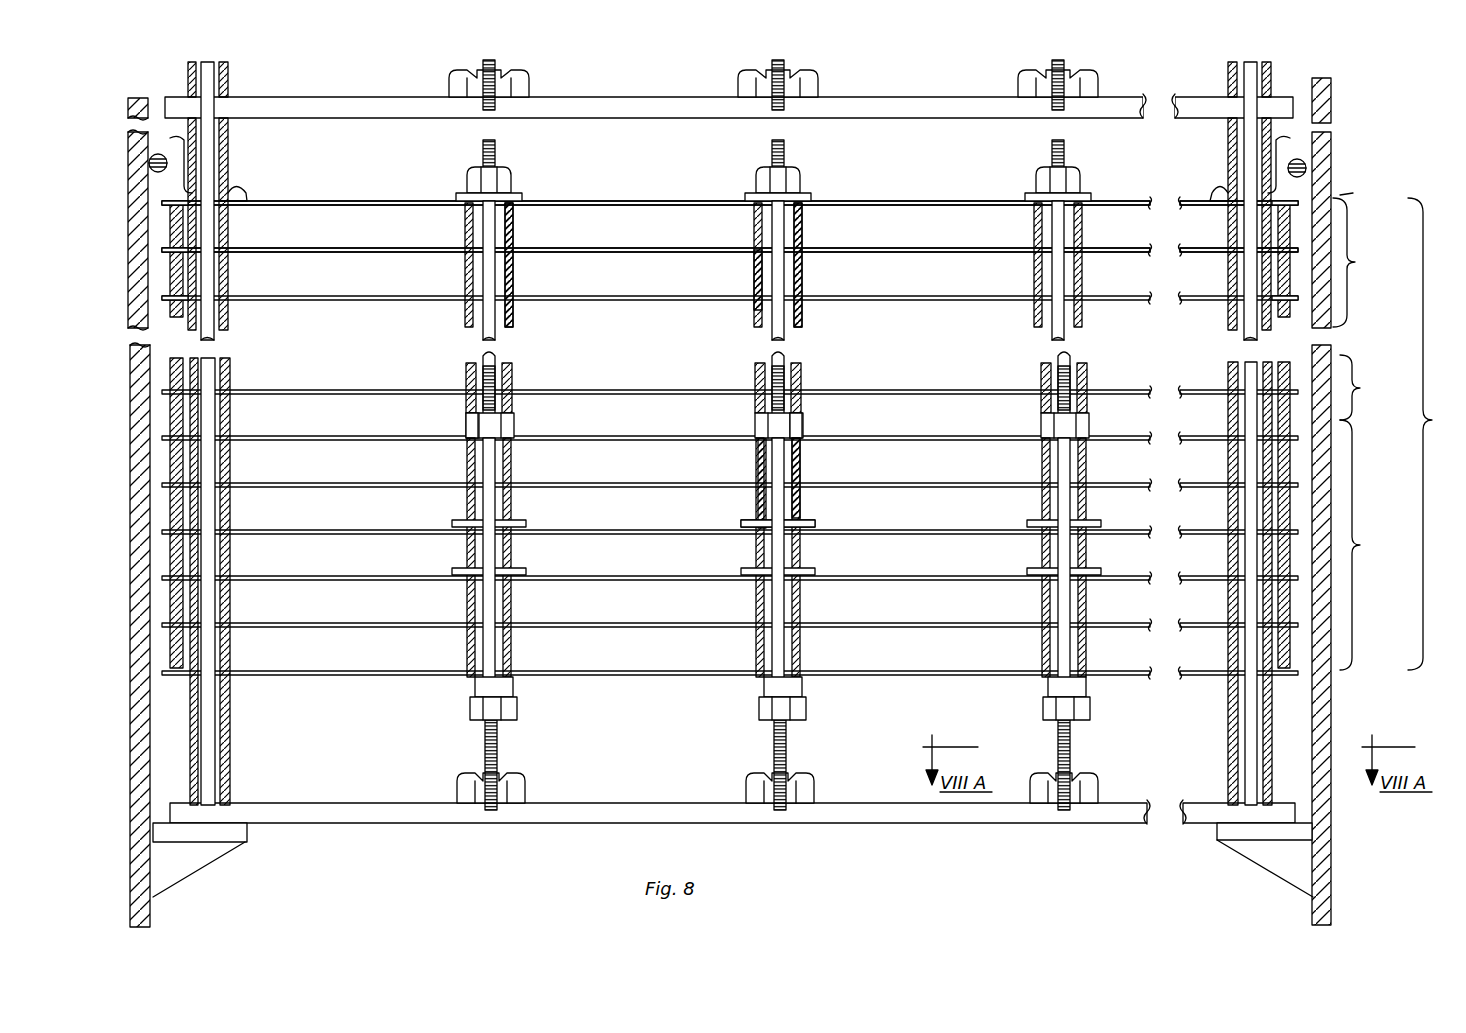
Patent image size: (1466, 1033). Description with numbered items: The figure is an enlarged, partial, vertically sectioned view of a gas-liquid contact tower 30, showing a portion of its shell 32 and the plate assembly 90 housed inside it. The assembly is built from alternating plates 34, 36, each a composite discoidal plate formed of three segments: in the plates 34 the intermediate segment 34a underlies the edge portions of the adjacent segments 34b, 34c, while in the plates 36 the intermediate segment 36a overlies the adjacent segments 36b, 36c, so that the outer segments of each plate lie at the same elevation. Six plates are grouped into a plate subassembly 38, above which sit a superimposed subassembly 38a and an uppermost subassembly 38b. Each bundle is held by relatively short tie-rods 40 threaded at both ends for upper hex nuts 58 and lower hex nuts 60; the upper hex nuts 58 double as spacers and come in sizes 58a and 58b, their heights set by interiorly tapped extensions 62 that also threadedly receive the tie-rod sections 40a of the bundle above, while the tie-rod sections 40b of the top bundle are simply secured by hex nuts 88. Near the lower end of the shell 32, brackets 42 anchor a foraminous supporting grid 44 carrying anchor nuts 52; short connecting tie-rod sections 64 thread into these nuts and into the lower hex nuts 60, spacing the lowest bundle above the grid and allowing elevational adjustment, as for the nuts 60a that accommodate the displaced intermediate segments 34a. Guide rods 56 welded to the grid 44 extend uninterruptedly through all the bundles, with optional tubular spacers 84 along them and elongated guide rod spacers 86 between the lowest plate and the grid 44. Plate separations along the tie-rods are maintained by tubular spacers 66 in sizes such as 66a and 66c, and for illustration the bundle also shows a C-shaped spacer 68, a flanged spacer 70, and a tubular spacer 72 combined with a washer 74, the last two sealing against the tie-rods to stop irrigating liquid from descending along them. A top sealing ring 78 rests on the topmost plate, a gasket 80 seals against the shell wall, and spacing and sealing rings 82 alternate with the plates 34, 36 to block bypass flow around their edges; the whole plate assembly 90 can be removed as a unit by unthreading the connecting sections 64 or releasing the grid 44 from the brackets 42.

The gas-liquid contact tower 30 is at (1353, 193).
The shell 32 is at (1330, 606).
The plate 34 is at (553, 203).
The intermediate segment 34a is at (897, 203).
The plate segment 34b is at (675, 203).
The plate segment 34c is at (1140, 203).
The plate 36 is at (582, 250).
The intermediate segment 36a is at (899, 250).
The plate segment 36b is at (649, 250).
The plate segment 36c is at (1149, 250).
The plate subassembly 38 is at (1360, 545).
The superimposed plate subassembly 38a is at (1360, 388).
The uppermost plate subassembly 38b is at (1355, 262).
The tie-rod 40 is at (500, 600).
The tie-rod section 40a is at (495, 358).
The tie-rod section 40b is at (490, 285).
The bracket 42 is at (212, 862).
The supporting grid 44 is at (330, 97).
The anchor nut 52 is at (515, 80).
The guide rod 56 is at (214, 78).
The upper hex nut 58 is at (514, 425).
The upper hex nut 58a is at (466, 425).
The upper hex nut 58b is at (803, 425).
The lower hex nut 60 is at (510, 688).
The tie-rod nut 60a is at (515, 710).
The hex nut extension 62 is at (466, 390).
The connecting tie-rod section 64 is at (480, 74).
The tubular spacer 66 is at (465, 228).
The tubular spacer 66a is at (513, 240).
The tubular spacer 66c is at (762, 275).
The C-shaped spacer 68 is at (1042, 570).
The flanged spacer 70 is at (800, 548).
The tubular spacer 72 is at (802, 460).
The washer 74 is at (810, 483).
The top sealing ring 78 is at (150, 172).
The gasket 80 is at (1305, 160).
The spacing and sealing ring 82 is at (175, 510).
The tubular spacer 84 is at (228, 235).
The elongated guide rod spacer 86 is at (188, 74).
The hex nut 88 is at (504, 175).
The plate assembly 90 is at (1433, 434).